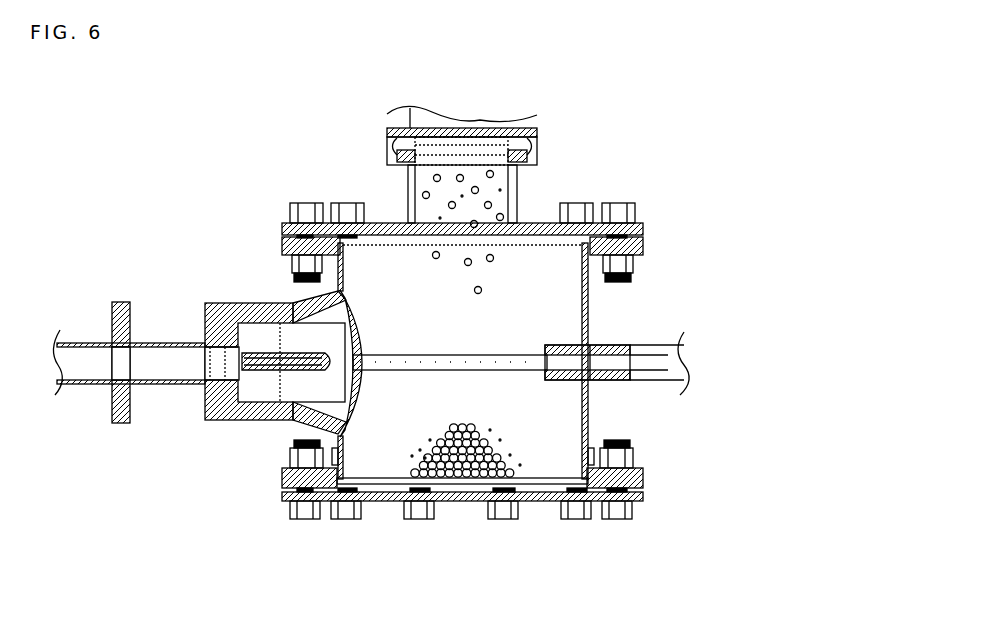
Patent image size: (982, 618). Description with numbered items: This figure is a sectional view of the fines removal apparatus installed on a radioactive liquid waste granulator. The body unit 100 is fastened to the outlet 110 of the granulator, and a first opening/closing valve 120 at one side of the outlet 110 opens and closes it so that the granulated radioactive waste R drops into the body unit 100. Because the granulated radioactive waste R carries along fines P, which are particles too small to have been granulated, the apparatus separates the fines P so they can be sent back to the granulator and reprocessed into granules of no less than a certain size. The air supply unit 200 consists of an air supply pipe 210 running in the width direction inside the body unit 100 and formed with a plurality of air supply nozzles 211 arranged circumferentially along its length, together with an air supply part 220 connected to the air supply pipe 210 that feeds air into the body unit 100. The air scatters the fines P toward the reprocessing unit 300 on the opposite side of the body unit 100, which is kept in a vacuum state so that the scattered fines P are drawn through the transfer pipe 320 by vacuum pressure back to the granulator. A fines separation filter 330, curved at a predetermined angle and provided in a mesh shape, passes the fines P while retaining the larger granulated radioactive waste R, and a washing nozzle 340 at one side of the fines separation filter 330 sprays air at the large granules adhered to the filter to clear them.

The body unit 100 is at (660, 223).
The outlet 110 is at (472, 139).
The first opening/closing valve 120 is at (537, 150).
The air supply unit 200 is at (606, 348).
The air supply pipe 210 is at (587, 380).
The air supply nozzles 211 is at (550, 380).
The air supply part 220 is at (670, 362).
The reprocessing unit 300 is at (203, 360).
The transfer pipe 320 is at (83, 368).
The fines separation filter 330 is at (340, 417).
The washing nozzle 340 is at (287, 371).
The fines P is at (410, 455).
The granulated radioactive waste R is at (467, 477).